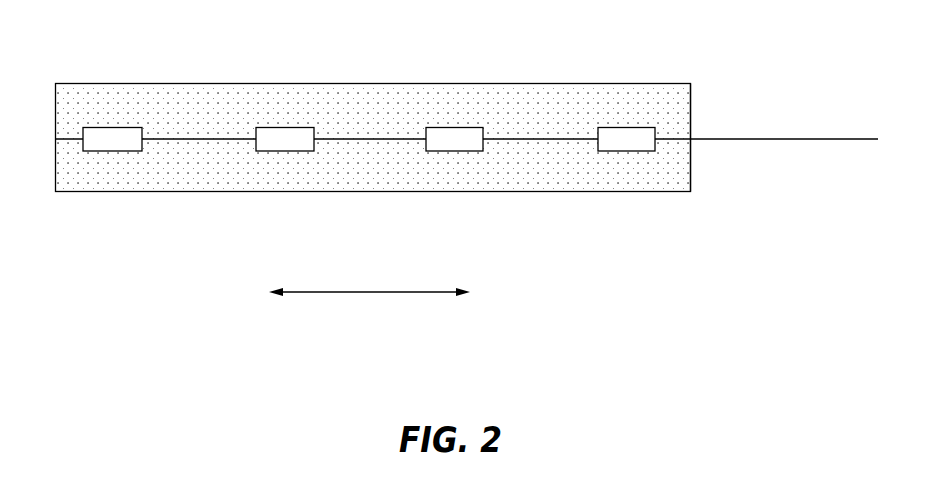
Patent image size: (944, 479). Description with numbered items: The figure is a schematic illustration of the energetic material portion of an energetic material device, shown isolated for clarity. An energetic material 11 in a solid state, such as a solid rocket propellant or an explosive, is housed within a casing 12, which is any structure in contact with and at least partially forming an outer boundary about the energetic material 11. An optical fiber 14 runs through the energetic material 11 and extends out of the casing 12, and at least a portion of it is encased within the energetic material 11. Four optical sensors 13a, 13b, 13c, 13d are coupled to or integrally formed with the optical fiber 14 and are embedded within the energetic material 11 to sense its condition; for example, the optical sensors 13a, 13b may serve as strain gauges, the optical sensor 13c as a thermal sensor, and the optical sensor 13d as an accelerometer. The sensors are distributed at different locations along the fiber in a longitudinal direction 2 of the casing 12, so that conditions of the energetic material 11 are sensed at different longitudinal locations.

The longitudinal direction 2 is at (377, 292).
The energetic material 11 is at (384, 111).
The casing 12 is at (521, 84).
The optical sensor 13a is at (630, 151).
The optical sensor 13b is at (458, 151).
The optical sensor 13c is at (285, 151).
The optical sensor 13d is at (116, 151).
The optical fiber 14 is at (203, 139).